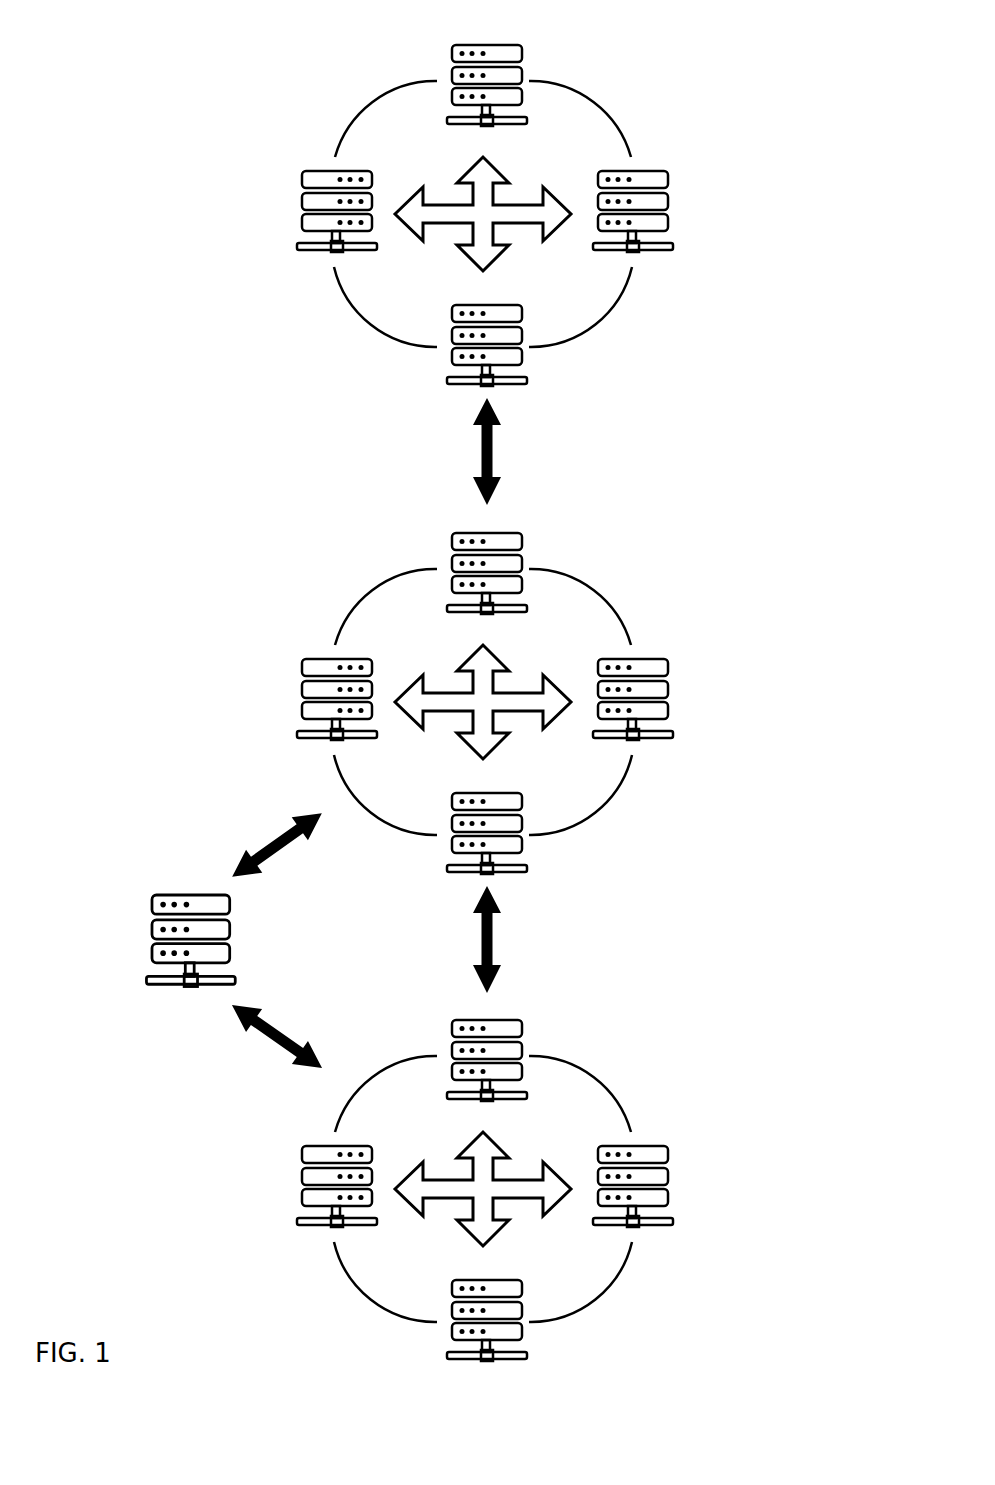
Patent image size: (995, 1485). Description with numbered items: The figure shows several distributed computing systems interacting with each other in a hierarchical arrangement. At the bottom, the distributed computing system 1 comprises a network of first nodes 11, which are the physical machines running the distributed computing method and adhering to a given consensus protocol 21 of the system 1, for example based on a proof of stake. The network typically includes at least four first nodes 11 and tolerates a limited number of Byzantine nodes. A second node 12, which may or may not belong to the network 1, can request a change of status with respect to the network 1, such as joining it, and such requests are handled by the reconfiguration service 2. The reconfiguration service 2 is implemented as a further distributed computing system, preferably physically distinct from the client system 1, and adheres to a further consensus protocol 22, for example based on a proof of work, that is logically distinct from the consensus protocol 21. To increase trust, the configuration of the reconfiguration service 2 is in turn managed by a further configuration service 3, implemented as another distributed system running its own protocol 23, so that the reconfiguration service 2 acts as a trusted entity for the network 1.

The distributed computing system 1 is at (492, 1192).
The first nodes 11 is at (447, 1035).
The second nodes 12 is at (233, 933).
The reconfiguration service 2 is at (510, 703).
The consensus protocol 21 is at (460, 1158).
The further consensus protocol 22 is at (460, 669).
The protocol 23 is at (457, 182).
The further configuration service 3 is at (506, 215).